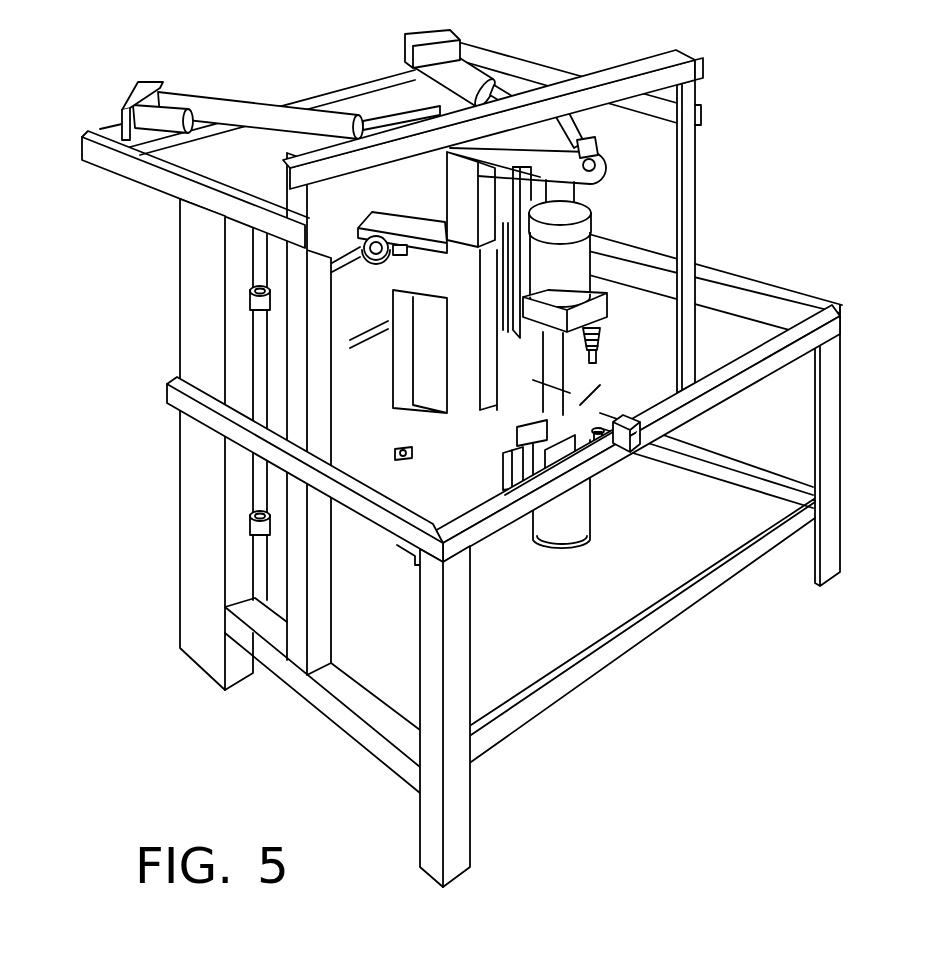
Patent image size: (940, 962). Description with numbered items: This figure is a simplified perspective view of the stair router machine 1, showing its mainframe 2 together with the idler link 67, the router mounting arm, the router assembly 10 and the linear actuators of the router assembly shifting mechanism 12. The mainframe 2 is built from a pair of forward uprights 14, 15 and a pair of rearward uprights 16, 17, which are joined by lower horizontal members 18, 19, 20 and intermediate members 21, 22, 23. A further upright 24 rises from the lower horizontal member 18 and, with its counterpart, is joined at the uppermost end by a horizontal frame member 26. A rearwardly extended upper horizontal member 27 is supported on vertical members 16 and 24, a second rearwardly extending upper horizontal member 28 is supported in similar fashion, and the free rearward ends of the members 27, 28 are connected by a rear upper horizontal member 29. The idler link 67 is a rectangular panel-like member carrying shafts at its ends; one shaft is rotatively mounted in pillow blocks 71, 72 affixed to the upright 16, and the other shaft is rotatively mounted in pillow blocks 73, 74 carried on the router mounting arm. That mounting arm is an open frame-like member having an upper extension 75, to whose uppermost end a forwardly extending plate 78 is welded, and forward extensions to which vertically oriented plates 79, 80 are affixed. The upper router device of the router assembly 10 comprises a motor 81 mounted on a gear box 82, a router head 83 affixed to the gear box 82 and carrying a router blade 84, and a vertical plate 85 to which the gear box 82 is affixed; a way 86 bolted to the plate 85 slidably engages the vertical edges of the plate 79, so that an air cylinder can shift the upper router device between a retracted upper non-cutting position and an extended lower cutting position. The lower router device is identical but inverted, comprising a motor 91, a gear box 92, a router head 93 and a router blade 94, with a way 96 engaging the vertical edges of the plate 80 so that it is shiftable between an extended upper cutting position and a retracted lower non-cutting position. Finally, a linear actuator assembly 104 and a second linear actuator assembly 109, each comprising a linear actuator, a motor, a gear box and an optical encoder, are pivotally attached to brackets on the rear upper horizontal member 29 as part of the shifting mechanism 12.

The stair router machine 1 is at (514, 596).
The mainframe 2 is at (705, 153).
The router assembly 10 is at (580, 219).
The router assembly shifting mechanism 12 is at (610, 150).
The forward upright 14 is at (460, 793).
The forward upright 15 is at (840, 547).
The rearward upright 16 is at (190, 525).
The rearward upright 17 is at (573, 121).
The lower horizontal member 18 is at (350, 725).
The lower horizontal member 19 is at (600, 660).
The lower horizontal member 20 is at (735, 466).
The intermediate member 21 is at (175, 385).
The intermediate member 22 is at (658, 457).
The intermediate member 23 is at (813, 292).
The upright 24 is at (322, 615).
The horizontal frame member 26 is at (372, 165).
The rearwardly extended upper horizontal member 27 is at (138, 178).
The second rearwardly extending upper horizontal member 28 is at (512, 75).
The rear upper horizontal member 29 is at (320, 88).
The idler link 67 is at (373, 384).
The pillow block 71 is at (260, 275).
The pillow block 72 is at (267, 527).
The pillow block 73 is at (390, 263).
The pillow block 74 is at (393, 532).
The upper extension 75 is at (452, 278).
The forwardly extending plate 78 is at (582, 170).
The vertically oriented plate 79 is at (533, 188).
The vertically oriented plate 80 is at (517, 437).
The motor 81 is at (582, 285).
The gear box 82 is at (552, 325).
The router head 83 is at (600, 343).
The router blade 84 is at (600, 362).
The vertical plate 85 is at (530, 262).
The way 86 is at (511, 288).
The motor 91 is at (560, 543).
The gear box 92 is at (560, 466).
The router head 93 is at (567, 447).
The router blade 94 is at (593, 430).
The way 96 is at (503, 475).
The linear actuator assembly 104 is at (275, 125).
The second linear actuator assembly 109 is at (455, 90).